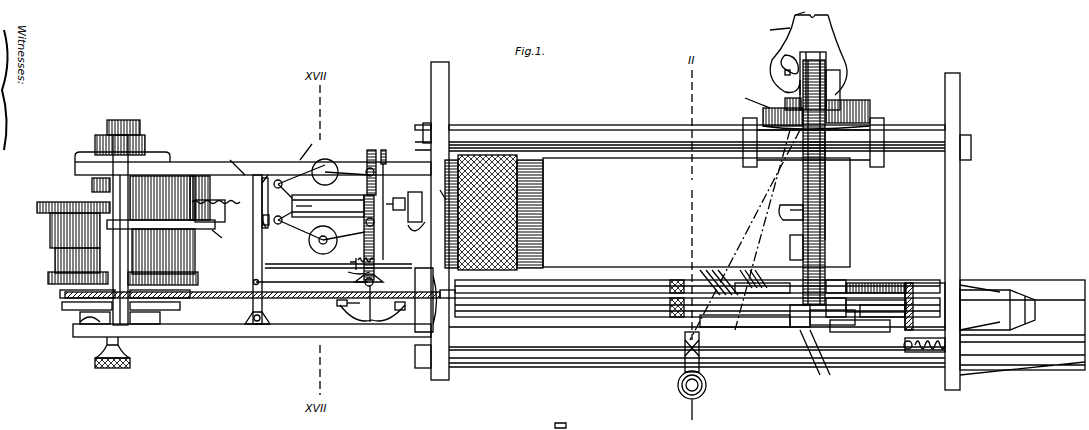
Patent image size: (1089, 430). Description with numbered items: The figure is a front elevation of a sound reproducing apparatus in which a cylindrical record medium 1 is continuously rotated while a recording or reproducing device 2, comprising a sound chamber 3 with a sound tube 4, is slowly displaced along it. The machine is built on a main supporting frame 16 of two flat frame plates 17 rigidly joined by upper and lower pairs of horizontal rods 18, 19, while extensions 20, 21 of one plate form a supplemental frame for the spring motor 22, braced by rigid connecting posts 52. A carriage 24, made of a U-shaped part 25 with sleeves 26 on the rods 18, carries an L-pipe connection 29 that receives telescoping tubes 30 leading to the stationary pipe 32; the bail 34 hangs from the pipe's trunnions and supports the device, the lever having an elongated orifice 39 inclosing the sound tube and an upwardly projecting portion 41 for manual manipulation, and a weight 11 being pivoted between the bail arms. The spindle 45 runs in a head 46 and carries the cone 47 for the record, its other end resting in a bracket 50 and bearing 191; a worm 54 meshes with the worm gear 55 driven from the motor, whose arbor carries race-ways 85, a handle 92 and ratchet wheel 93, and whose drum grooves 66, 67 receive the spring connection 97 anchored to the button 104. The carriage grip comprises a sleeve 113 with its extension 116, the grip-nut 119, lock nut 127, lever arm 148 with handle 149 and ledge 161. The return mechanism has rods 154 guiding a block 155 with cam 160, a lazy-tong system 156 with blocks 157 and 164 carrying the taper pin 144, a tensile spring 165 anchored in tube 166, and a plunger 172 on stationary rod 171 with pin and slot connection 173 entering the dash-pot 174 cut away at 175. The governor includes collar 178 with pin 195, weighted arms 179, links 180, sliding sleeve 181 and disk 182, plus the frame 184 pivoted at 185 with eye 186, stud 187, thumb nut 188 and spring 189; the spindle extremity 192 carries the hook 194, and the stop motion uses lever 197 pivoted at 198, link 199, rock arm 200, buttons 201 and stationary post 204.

The record medium 1 is at (696, 212).
The recording or reproducing device 2 is at (844, 87).
The sound chamber 3 is at (765, 115).
The sound tube 4 is at (813, 81).
The weight 11 is at (752, 96).
The main supporting frame 16 is at (680, 116).
The frame plates 17 is at (443, 100).
The upper horizontal rods 18 is at (645, 140).
The lower horizontal rods 19 is at (787, 368).
The frame plate extension 20 is at (176, 337).
The frame plate extension 21 is at (252, 172).
The driving motor 22 is at (73, 233).
The carriage 24 is at (847, 182).
The U-shaped rigid metal part 25 is at (822, 195).
The sleeves 26 is at (813, 142).
The L-pipe connection 29 is at (812, 48).
The telescoping tubes 30 is at (730, 268).
The stationary pipe 32 is at (678, 388).
The bail 34 is at (788, 100).
The elongated orifice 39 is at (782, 56).
The upwardly projecting lever portion 41 is at (558, 423).
The spindle 45 is at (361, 216).
The head 46 is at (439, 190).
The cone 47 is at (494, 212).
The bracket 50 is at (208, 229).
The connecting posts 52 is at (112, 262).
The worm 54 is at (216, 211).
The worm gear 55 is at (229, 238).
The groove 66 is at (60, 293).
The groove 67 is at (62, 306).
The ball bearing race-ways 85 is at (92, 184).
The handle 92 is at (107, 352).
The ratchet wheel 93 is at (75, 323).
The spring connection 97 is at (225, 298).
The button 104 is at (448, 290).
The sleeve 113 is at (547, 280).
The sleeve extension 116 is at (716, 280).
The grip-nut 119 is at (762, 279).
The lock nut 127 is at (672, 285).
The taper pin 144 is at (826, 290).
The lever arm 148 is at (790, 245).
The handle 149 is at (786, 212).
The rods 154 is at (755, 327).
The block 155 is at (828, 364).
The lazy-tong system 156 is at (876, 289).
The blocks 157 is at (830, 327).
The cam 160 is at (798, 327).
The ledge 161 is at (812, 366).
The blocks 164 is at (895, 335).
The tensile spring 165 is at (920, 355).
The tube 166 is at (1022, 358).
The stationary rod 171 is at (605, 298).
The plunger 172 is at (1020, 295).
The pin and slot connection 173 is at (930, 283).
The dash-pot 174 is at (1022, 325).
The cut-away side 175 is at (980, 285).
The governor collar 178 is at (310, 145).
The weighted arms 179 is at (299, 204).
The link connections 180 is at (350, 236).
The sliding sleeve 181 is at (328, 206).
The disk 182 is at (388, 160).
The non-rotatable frame 184 is at (372, 150).
The pivot 185 is at (365, 170).
The eye 186 is at (349, 271).
The stud 187 is at (393, 264).
The thumb nut 188 is at (350, 260).
The spring 189 is at (372, 270).
The bearing 191 is at (410, 196).
The spindle outer extremity 192 is at (272, 229).
The hook 194 is at (306, 200).
The pin 195 is at (282, 175).
The lever 197 is at (258, 228).
The pivot 198 is at (269, 317).
The link connection 199 is at (311, 275).
The rock arm 200 is at (334, 301).
The buttons 201 is at (365, 305).
The stationary post 204 is at (228, 161).